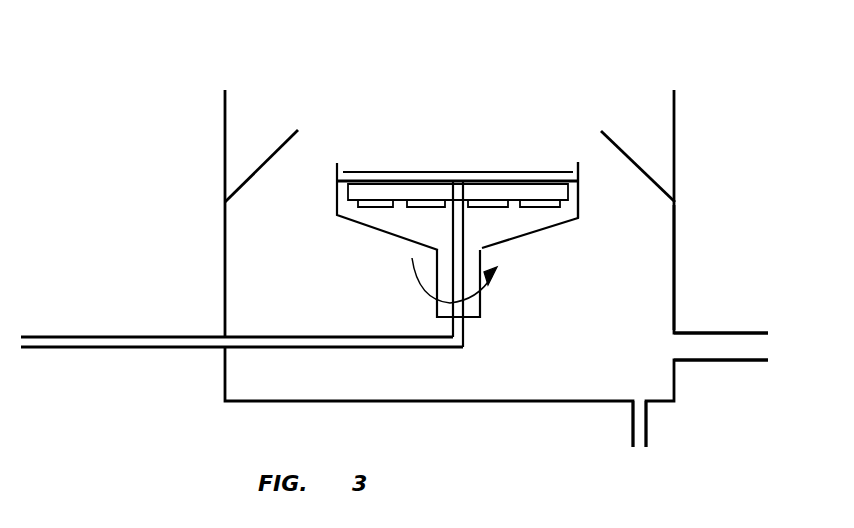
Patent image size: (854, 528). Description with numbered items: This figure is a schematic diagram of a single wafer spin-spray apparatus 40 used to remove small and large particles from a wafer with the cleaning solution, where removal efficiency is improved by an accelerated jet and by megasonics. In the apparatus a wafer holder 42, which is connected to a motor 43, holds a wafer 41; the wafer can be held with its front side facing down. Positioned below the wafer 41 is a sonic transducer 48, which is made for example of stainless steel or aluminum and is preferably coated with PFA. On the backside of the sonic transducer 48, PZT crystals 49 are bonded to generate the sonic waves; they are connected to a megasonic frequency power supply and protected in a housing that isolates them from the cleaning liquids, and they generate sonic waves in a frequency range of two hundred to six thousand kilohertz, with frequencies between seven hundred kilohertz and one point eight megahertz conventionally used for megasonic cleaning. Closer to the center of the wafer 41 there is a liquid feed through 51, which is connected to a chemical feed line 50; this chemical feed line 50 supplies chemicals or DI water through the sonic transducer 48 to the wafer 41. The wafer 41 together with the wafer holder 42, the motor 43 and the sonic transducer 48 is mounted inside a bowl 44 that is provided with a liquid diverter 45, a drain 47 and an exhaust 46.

The single wafer spin-spray apparatus 40 is at (368, 76).
The wafer 41 is at (372, 173).
The wafer holder 42 is at (583, 172).
The motor 43 is at (463, 256).
The bowl 44 is at (678, 275).
The liquid diverter 45 is at (633, 158).
The exhaust 46 is at (725, 360).
The drain 47 is at (633, 420).
The sonic transducer 48 is at (348, 192).
The PZT crystals 49 is at (375, 207).
The chemical feed line 50 is at (115, 348).
The liquid feed through 51 is at (455, 180).